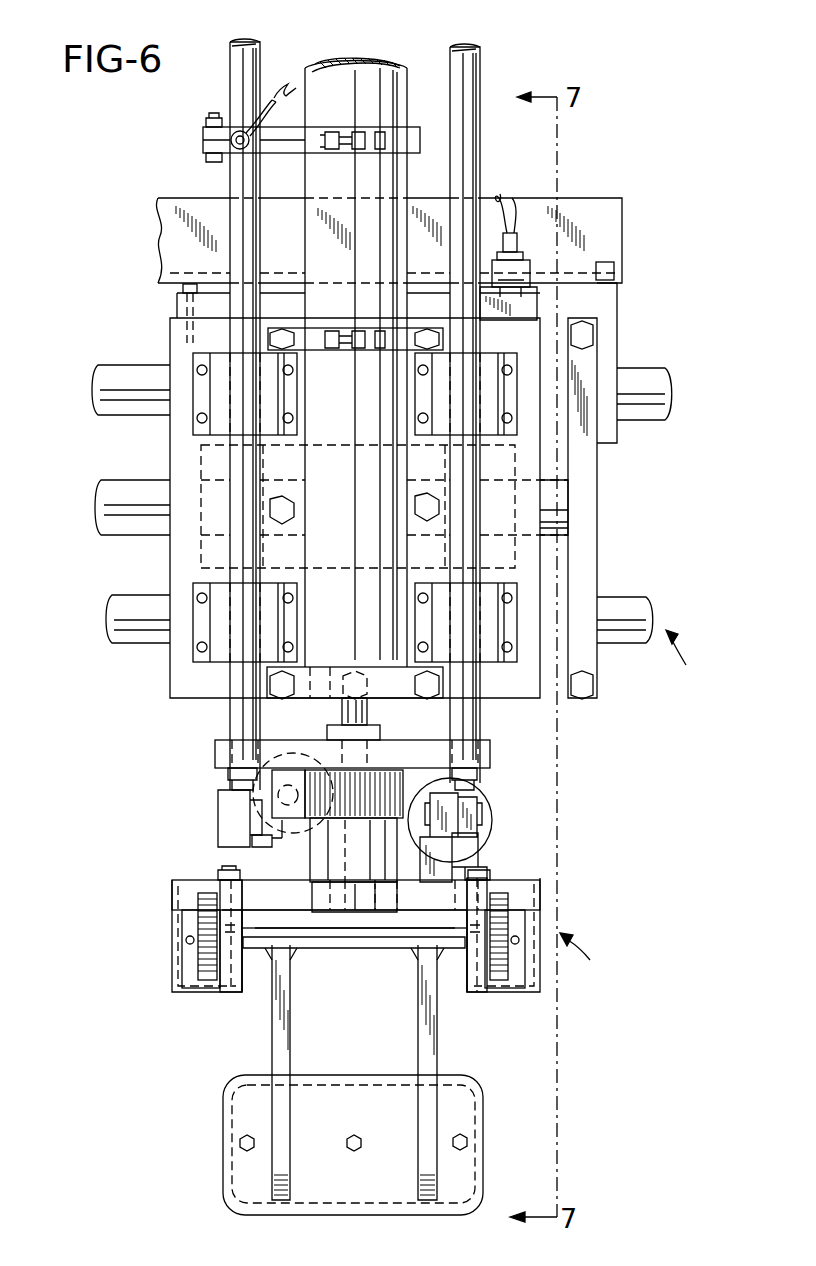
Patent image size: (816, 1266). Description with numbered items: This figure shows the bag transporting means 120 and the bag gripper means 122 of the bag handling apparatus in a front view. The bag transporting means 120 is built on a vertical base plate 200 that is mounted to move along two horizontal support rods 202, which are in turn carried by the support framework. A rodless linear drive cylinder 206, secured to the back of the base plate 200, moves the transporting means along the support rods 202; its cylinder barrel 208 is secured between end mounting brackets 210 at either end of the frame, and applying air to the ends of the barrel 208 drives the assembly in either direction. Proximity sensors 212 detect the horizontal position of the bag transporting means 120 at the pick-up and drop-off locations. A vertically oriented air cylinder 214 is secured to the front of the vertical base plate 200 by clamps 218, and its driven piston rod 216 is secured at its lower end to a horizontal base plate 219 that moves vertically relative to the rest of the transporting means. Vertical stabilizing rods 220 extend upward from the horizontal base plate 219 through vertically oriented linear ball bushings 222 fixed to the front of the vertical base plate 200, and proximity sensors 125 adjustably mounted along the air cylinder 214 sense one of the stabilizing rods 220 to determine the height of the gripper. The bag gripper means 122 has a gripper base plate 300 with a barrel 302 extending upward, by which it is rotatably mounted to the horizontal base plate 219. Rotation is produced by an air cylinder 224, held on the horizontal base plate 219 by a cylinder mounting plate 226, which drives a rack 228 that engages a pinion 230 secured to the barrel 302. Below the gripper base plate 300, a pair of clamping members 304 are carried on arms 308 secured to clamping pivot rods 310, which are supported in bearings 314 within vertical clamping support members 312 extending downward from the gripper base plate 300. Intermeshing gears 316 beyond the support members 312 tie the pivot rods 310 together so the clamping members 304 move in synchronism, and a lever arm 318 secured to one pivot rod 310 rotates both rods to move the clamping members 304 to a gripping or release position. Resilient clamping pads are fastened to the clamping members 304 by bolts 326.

The bag transporting means 120 is at (676, 669).
The bag gripper means 122 is at (602, 956).
The proximity sensors 125 is at (236, 112).
The vertical base plate 200 is at (176, 690).
The horizontal support rods 202 is at (130, 412).
The rodless linear drive cylinder 206 is at (205, 545).
The cylinder barrel 208 is at (100, 490).
The end mounting brackets 210 is at (592, 472).
The proximity sensors 212 is at (518, 230).
The vertically oriented air cylinder 214 is at (400, 92).
The piston rod 216 is at (342, 712).
The clamps 218 is at (322, 352).
The horizontal base plate 219 is at (215, 755).
The vertical stabilizing rods 220 is at (230, 712).
The bushings 222 is at (428, 412).
The air cylinder 224 is at (262, 808).
The cylinder mounting plate 226 is at (228, 795).
The rack 228 is at (272, 842).
The pinion 230 is at (398, 780).
The gripper base plate 300 is at (235, 880).
The barrel 302 is at (318, 866).
The clamping members 304 is at (250, 1183).
The arms 308 is at (418, 1040).
The clamping pivot rods 310 is at (322, 942).
The vertical clamping support members 312 is at (247, 990).
The bearings 314 is at (480, 895).
The intermeshing gears 316 is at (205, 975).
The lever arm 318 is at (455, 824).
The bolts 326 is at (238, 1145).